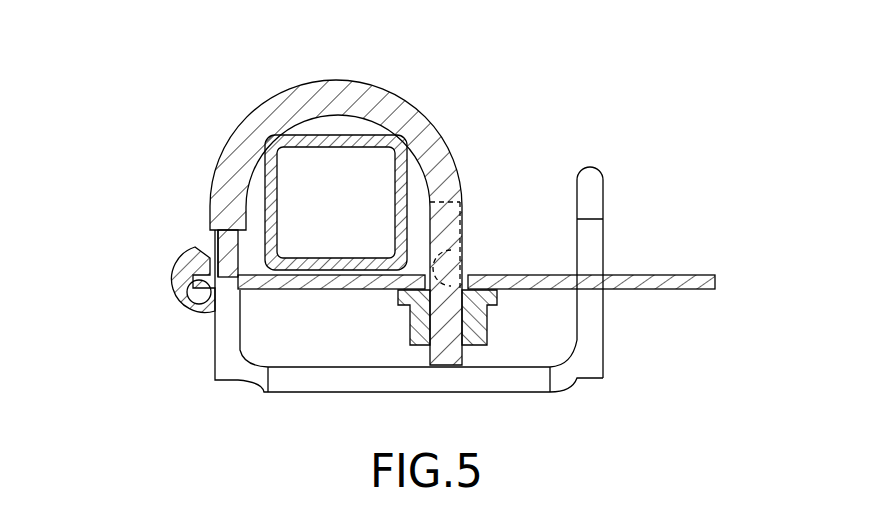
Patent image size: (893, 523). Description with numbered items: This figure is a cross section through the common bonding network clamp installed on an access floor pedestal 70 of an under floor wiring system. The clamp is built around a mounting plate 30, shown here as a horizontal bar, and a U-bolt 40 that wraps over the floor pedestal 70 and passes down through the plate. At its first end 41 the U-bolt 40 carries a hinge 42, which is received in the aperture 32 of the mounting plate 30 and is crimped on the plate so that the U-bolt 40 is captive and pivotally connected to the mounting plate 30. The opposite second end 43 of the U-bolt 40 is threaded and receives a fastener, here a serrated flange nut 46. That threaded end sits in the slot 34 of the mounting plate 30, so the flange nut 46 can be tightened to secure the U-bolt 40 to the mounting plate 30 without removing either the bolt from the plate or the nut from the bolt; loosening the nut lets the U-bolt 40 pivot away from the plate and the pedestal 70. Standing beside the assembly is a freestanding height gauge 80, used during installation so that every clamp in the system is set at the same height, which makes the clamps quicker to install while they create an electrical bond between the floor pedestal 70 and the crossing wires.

The mounting plate 30 is at (686, 273).
The aperture 32 is at (220, 321).
The slot 34 is at (445, 258).
The U-bolt 40 is at (267, 95).
The first end 41 is at (220, 250).
The hinge 42 is at (172, 265).
The second end 43 is at (465, 352).
The serrated flange nut 46 is at (410, 333).
The access floor pedestal 70 is at (352, 135).
The freestanding height gauge 80 is at (597, 228).